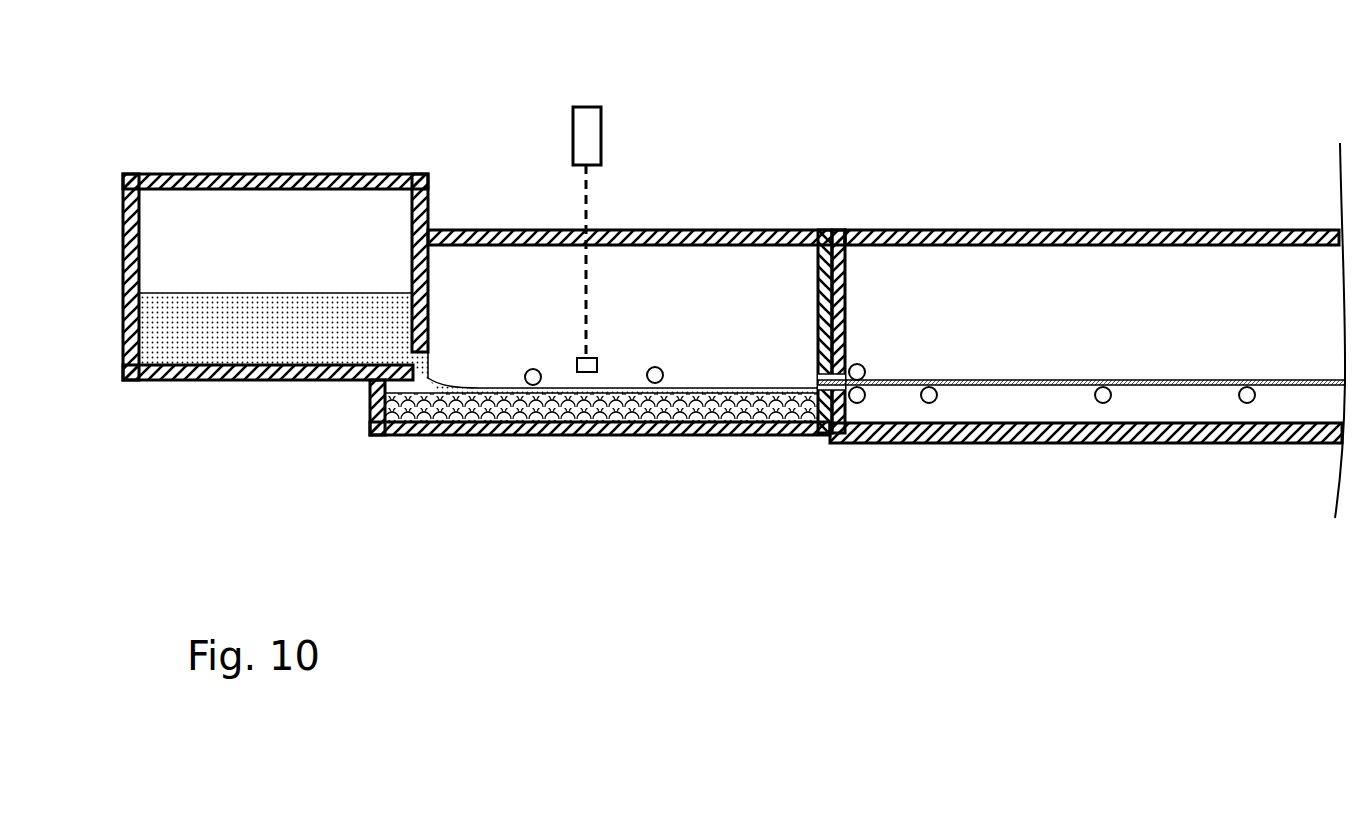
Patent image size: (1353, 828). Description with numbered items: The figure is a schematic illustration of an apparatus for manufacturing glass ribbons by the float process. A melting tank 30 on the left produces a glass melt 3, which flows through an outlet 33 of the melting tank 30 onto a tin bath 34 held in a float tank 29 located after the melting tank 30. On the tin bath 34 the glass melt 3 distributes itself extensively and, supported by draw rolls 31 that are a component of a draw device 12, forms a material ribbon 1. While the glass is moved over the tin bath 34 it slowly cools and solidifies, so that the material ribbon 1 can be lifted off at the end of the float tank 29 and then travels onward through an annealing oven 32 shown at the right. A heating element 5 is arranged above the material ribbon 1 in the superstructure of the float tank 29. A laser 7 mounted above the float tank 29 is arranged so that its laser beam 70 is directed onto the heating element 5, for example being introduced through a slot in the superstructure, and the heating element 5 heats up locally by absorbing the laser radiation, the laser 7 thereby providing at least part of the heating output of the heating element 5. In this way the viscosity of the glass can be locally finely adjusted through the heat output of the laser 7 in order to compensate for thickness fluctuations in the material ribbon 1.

The material ribbon 1 is at (948, 380).
The glass melt 3 is at (205, 292).
The heating element 5 is at (600, 358).
The laser 7 is at (602, 137).
The draw device 12 is at (850, 281).
The float tank 29 is at (500, 435).
The melting tank 30 is at (180, 175).
The draw rolls 31 is at (533, 368).
The annealing oven 32 is at (930, 230).
The outlet 33 is at (413, 383).
The tin bath 34 is at (713, 435).
The laser beam 70 is at (586, 215).